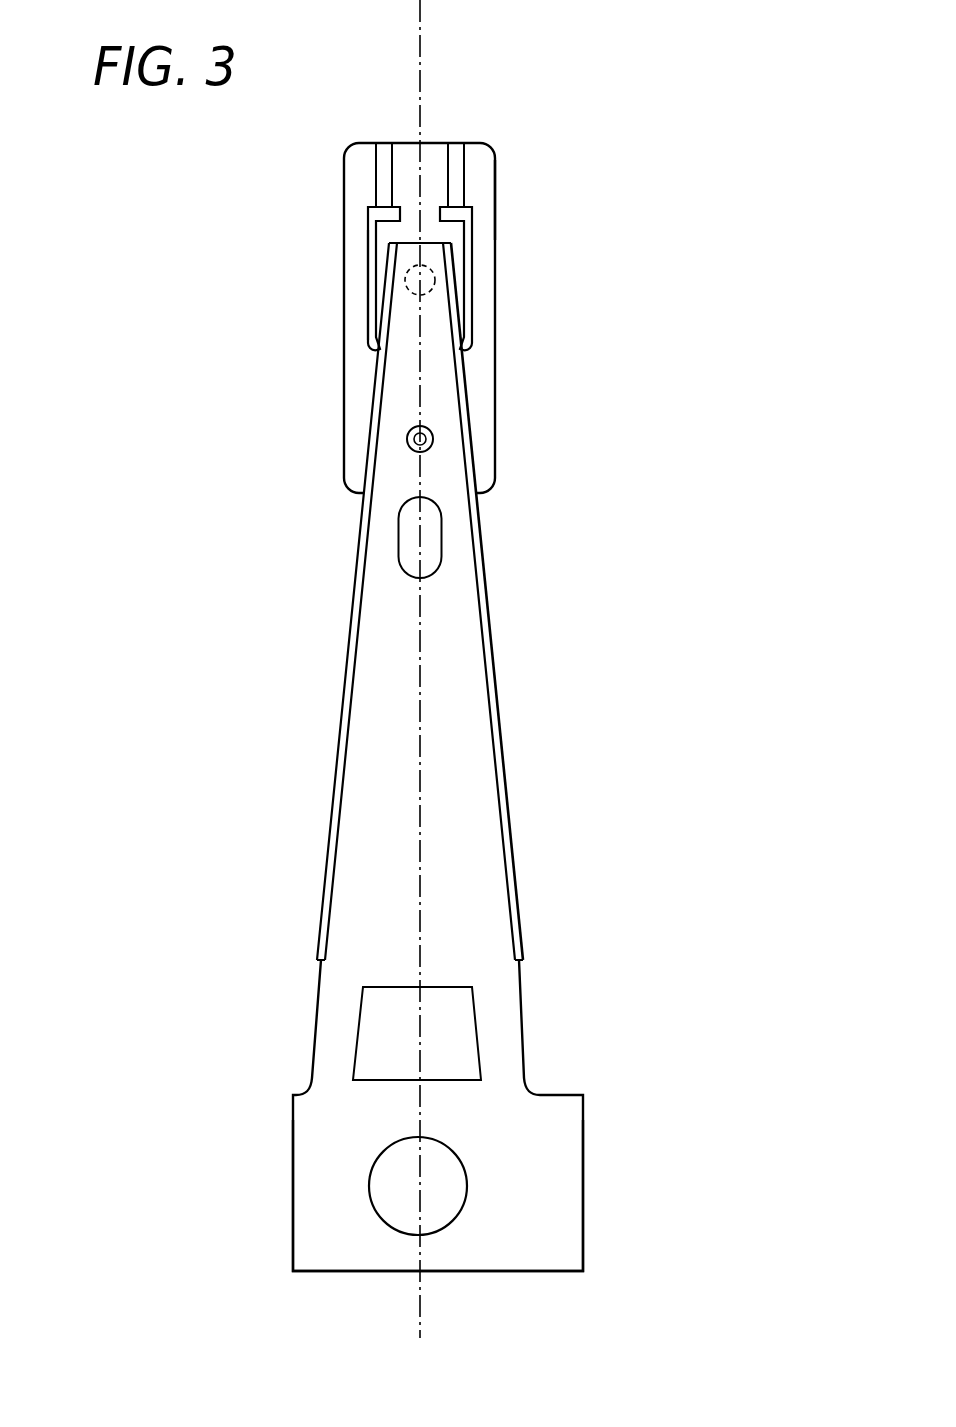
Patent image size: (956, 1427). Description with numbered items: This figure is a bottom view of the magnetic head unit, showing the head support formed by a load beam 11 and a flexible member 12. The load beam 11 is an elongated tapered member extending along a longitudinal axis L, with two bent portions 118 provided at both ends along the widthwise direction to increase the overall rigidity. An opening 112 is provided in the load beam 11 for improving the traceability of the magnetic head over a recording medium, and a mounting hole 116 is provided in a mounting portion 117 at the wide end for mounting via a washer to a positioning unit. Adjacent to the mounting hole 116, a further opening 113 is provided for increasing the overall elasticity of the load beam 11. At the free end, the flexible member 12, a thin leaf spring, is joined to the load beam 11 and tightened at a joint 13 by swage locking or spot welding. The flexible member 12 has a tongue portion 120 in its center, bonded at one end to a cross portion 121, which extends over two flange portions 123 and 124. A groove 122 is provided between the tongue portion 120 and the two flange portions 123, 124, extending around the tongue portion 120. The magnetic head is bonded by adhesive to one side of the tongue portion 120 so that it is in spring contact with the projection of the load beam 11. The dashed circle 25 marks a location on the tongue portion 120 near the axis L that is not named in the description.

The longitudinal axis L is at (420, 10).
The load beam 11 is at (358, 782).
The flexible member 12 is at (478, 412).
The joint 13 is at (405, 437).
The shaft position 25 is at (433, 288).
The opening 112 is at (433, 538).
The opening 113 is at (360, 1018).
The mounting hole 116 is at (443, 1228).
The mounting portion 117 is at (583, 1145).
The bent portions 118 is at (492, 640).
The tongue portion 120 is at (383, 270).
The cross portion 121 is at (458, 147).
The groove 122 is at (375, 335).
The flange portion 123 is at (478, 198).
The flange portion 124 is at (365, 216).